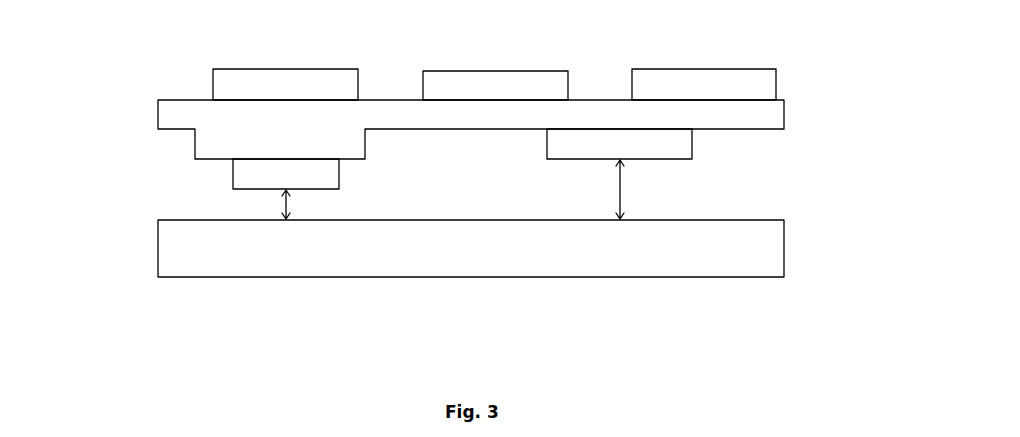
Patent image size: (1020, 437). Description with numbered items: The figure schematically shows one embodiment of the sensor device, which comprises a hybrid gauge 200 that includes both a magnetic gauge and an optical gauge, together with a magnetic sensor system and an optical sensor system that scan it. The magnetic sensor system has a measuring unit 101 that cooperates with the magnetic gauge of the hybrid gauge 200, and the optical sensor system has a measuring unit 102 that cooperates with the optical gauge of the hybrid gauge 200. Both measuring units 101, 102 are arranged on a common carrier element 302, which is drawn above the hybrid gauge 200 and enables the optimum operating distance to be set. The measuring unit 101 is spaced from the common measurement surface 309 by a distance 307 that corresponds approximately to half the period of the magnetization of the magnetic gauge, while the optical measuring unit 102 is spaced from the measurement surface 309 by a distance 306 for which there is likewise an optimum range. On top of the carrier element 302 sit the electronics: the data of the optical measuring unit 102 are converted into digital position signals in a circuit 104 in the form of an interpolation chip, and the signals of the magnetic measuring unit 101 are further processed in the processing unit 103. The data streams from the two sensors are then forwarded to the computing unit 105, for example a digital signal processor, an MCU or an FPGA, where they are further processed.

The carrier element 302 is at (172, 117).
The processing unit 103 is at (274, 87).
The computing unit 105 is at (488, 88).
The circuit 104 is at (702, 84).
The measuring unit 101 is at (240, 178).
The measuring unit 102 is at (675, 146).
The hybrid gauge 200 is at (372, 252).
The distance 307 is at (272, 208).
The distance 306 is at (632, 188).
The measurement surface 309 is at (487, 203).